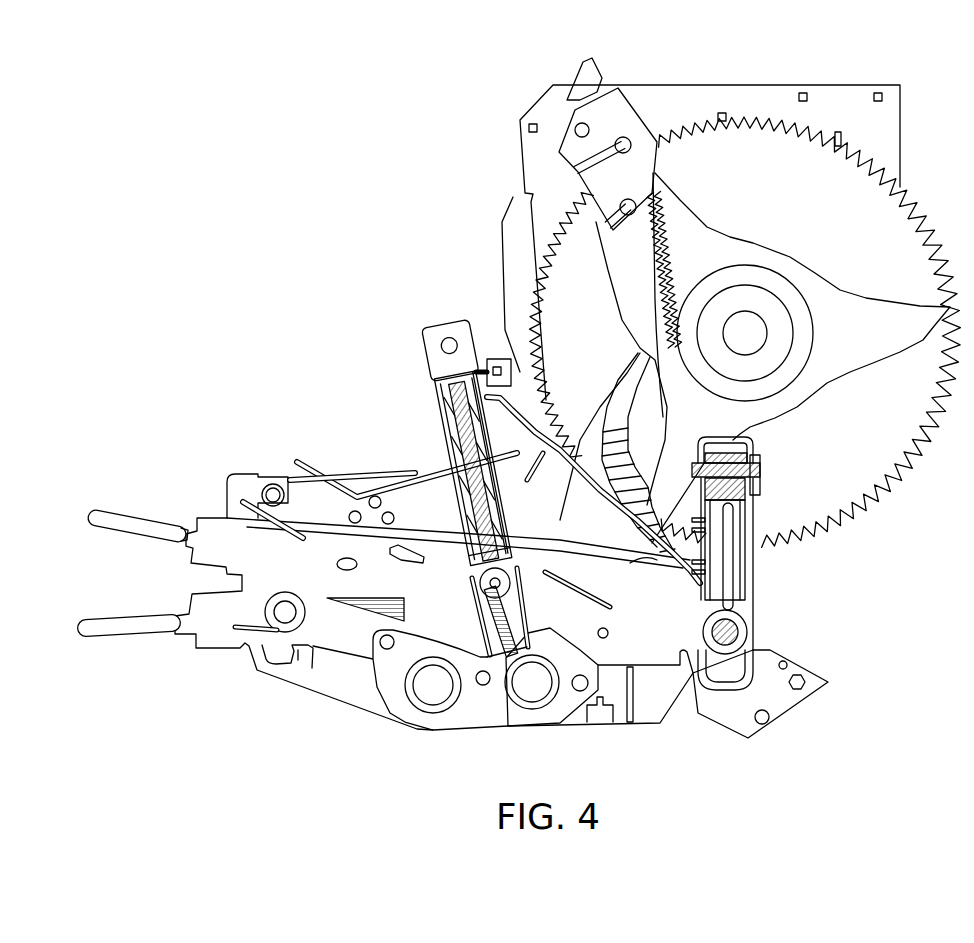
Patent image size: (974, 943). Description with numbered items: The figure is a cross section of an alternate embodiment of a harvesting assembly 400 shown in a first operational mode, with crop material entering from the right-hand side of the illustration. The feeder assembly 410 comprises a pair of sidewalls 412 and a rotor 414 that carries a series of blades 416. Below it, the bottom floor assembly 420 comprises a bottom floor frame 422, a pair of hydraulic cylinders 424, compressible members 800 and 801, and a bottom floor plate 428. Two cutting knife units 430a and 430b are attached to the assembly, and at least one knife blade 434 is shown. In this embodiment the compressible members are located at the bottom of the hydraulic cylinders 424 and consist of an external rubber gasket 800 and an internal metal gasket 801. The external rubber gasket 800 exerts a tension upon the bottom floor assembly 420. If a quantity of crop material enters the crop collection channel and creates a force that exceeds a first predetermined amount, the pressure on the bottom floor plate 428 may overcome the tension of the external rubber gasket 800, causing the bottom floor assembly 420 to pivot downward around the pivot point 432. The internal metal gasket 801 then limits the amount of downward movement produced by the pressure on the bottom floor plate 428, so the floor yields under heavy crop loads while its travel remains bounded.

The harvesting assembly 400 is at (457, 136).
The feeder assembly 410 is at (903, 521).
The sidewalls 412 is at (843, 98).
The rotor 414 is at (780, 275).
The blades 416 is at (878, 312).
The bottom floor assembly 420 is at (160, 466).
The bottom floor frame 422 is at (358, 667).
The hydraulic cylinder 424 is at (462, 432).
The bottom floor plate 428 is at (760, 653).
The cutting knife unit 430a is at (215, 525).
The cutting knife unit 430b is at (210, 637).
The pivot point 432 is at (725, 630).
The knife blade 434 is at (640, 412).
The external rubber gasket 800 is at (490, 632).
The internal metal gasket 801 is at (500, 640).